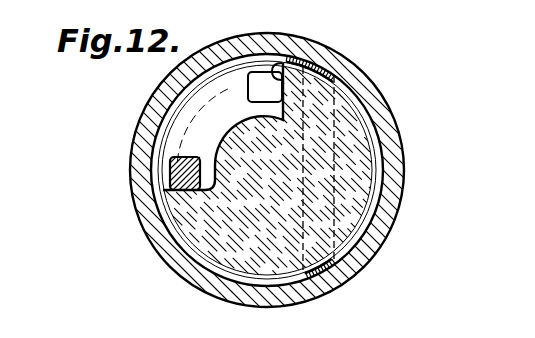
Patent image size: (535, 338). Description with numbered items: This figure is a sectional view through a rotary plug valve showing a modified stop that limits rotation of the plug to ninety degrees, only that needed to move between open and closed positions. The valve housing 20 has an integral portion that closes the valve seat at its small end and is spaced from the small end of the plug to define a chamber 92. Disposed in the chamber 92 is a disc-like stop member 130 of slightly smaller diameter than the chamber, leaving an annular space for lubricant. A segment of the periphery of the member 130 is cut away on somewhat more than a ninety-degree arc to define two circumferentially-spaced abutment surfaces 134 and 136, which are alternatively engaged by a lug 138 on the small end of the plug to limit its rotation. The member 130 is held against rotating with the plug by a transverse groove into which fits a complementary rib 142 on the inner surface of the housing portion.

The housing 20 is at (398, 201).
The chamber 92 is at (188, 114).
The disc-like stop member 130 is at (358, 146).
The abutment surface 134 is at (172, 191).
The abutment surface 136 is at (283, 66).
The lug 138 is at (233, 37).
The rib 142 is at (343, 268).